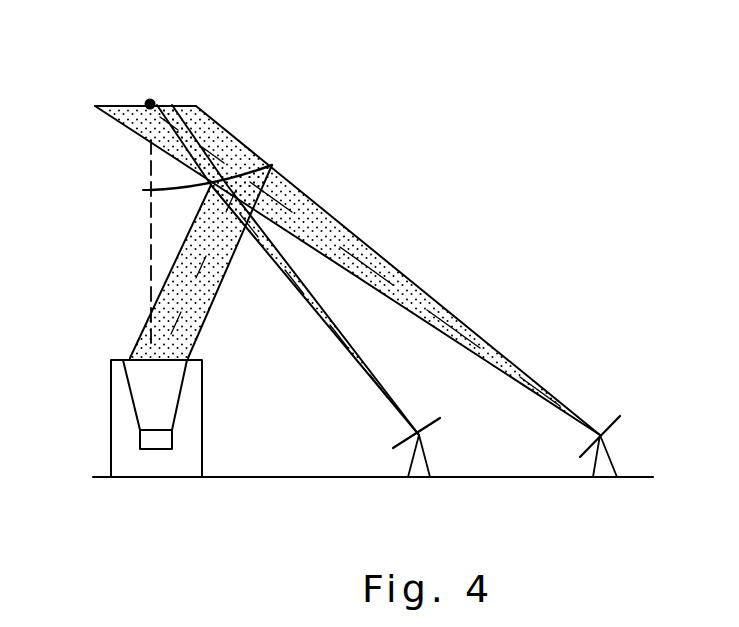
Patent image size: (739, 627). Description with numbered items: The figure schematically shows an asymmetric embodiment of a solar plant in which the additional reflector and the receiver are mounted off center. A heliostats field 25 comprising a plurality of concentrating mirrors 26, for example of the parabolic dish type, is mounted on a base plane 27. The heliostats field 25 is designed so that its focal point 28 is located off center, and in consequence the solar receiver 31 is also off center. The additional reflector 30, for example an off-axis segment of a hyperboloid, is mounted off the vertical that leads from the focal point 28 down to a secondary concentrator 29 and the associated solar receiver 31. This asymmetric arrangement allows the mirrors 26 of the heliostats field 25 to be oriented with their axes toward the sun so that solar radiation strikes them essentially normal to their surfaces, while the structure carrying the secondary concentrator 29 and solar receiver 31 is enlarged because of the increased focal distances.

The heliostats field 25 is at (360, 436).
The concentrating mirrors 26 is at (600, 433).
The base plane 27 is at (498, 478).
The focal point 28 is at (151, 100).
The secondary concentrator 29 is at (155, 403).
The additional reflector 30 is at (270, 184).
The solar receiver 31 is at (158, 441).